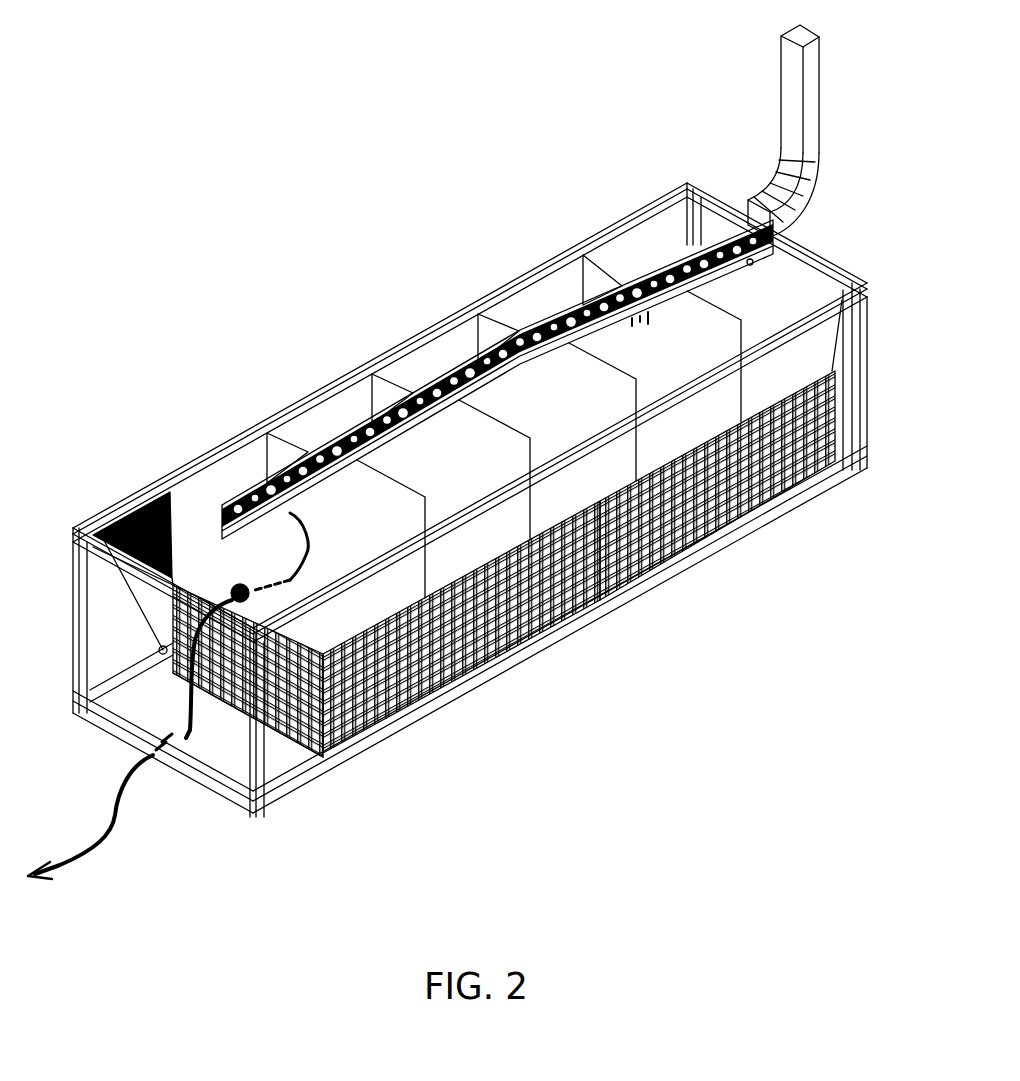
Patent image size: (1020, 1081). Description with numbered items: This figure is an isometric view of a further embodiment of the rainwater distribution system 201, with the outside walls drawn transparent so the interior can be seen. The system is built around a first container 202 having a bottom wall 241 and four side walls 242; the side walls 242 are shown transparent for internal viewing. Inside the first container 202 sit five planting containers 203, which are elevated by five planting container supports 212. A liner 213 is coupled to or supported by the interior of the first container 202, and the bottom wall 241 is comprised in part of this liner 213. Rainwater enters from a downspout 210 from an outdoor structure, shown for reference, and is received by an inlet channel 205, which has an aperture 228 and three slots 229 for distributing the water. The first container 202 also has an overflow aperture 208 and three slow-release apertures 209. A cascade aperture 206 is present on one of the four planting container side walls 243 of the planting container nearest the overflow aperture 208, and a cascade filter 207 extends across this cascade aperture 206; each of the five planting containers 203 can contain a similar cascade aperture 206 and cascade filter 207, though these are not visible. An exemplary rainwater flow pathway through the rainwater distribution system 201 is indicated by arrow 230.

The rainwater distribution system 201 is at (336, 239).
The first container 202 is at (720, 535).
The planting containers 203 is at (233, 485).
The inlet channel 205 is at (225, 515).
The cascade aperture 206 is at (387, 723).
The cascade filter 207 is at (355, 763).
The overflow aperture 208 is at (73, 550).
The slow-release apertures 209 is at (150, 755).
The downspout 210 is at (822, 160).
The planting container supports 212 is at (488, 660).
The liner 213 is at (165, 585).
The aperture 228 is at (758, 262).
The slots 229 is at (803, 488).
The arrow 230 is at (107, 847).
The bottom wall 241 is at (600, 603).
The side walls 242 is at (868, 412).
The planting container side walls 243 is at (581, 268).